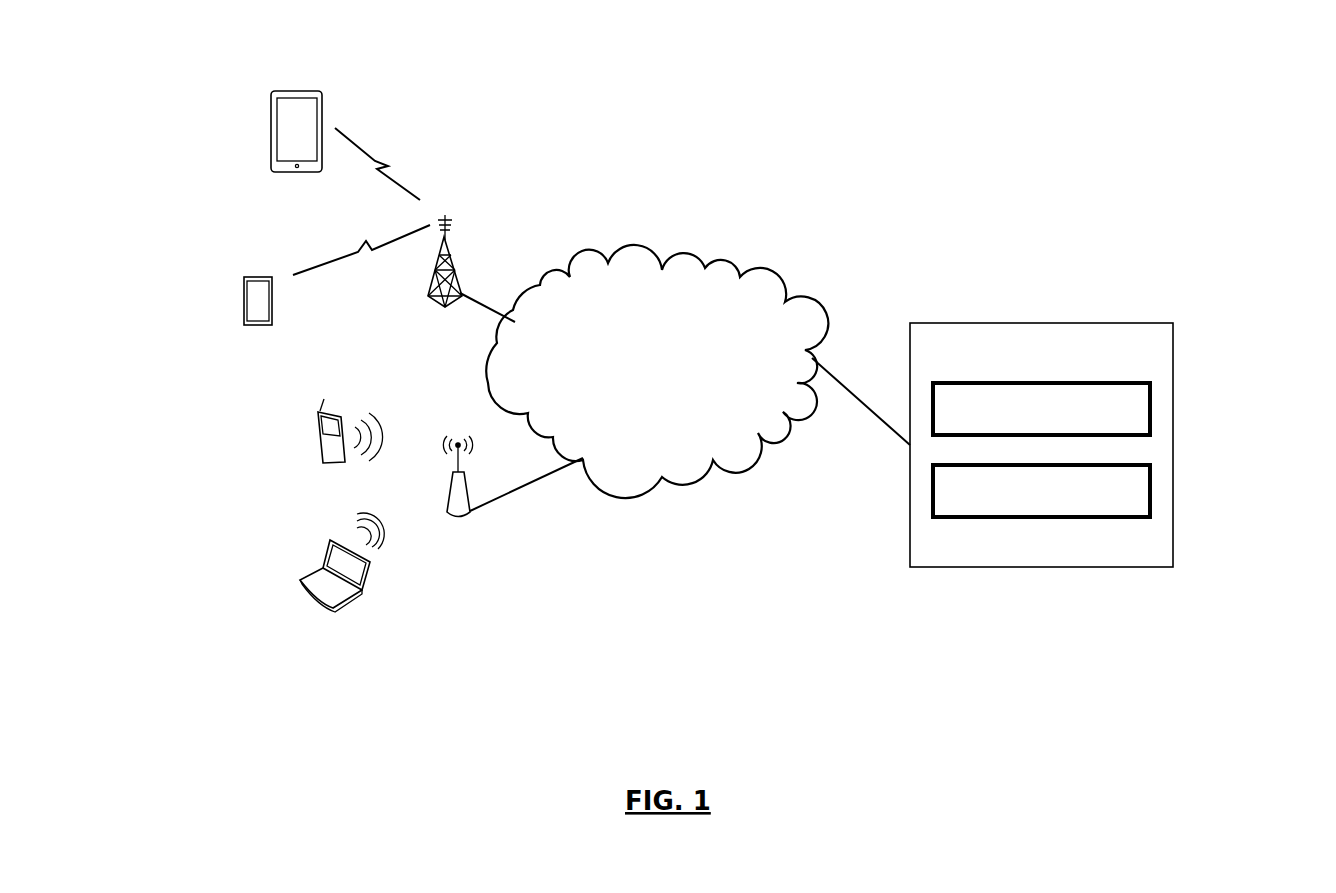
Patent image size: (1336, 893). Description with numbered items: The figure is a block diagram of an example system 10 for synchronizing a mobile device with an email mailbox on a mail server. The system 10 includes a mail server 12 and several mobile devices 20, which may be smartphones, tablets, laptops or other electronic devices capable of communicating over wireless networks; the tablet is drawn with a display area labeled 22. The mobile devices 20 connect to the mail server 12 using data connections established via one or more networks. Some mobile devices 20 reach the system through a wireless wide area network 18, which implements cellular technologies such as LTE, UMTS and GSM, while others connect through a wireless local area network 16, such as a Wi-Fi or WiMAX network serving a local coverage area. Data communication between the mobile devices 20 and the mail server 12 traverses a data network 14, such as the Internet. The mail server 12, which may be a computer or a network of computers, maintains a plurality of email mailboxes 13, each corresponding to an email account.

The system 10 is at (861, 158).
The mail server 12 is at (1173, 443).
The email mailbox 13 is at (932, 410).
The data network 14 is at (698, 371).
The wireless local area network 16 is at (497, 552).
The wireless wide area network 18 is at (493, 232).
The mobile device 20 is at (272, 115).
The display screen 22 is at (297, 131).